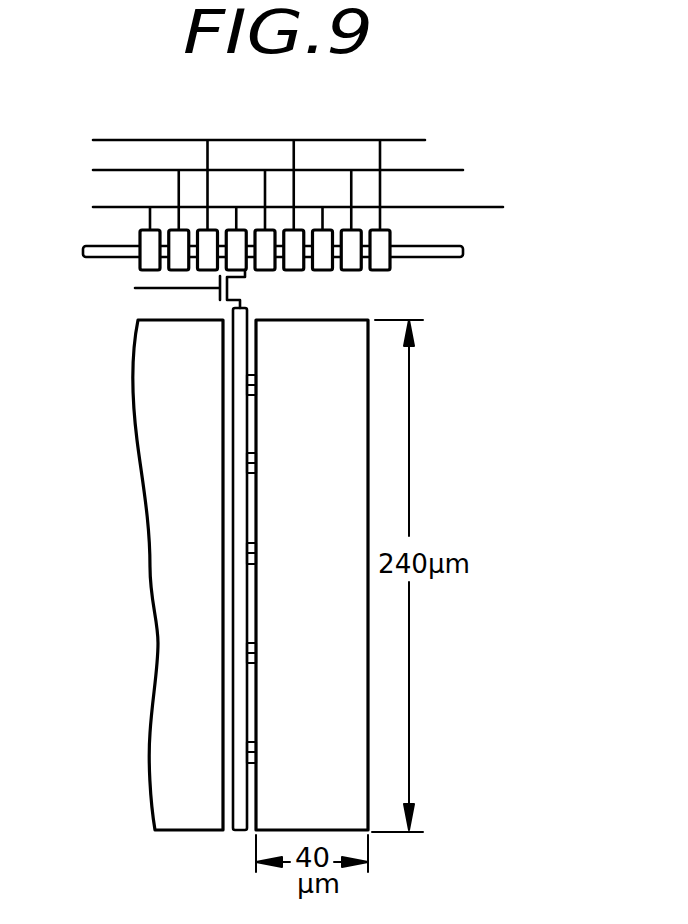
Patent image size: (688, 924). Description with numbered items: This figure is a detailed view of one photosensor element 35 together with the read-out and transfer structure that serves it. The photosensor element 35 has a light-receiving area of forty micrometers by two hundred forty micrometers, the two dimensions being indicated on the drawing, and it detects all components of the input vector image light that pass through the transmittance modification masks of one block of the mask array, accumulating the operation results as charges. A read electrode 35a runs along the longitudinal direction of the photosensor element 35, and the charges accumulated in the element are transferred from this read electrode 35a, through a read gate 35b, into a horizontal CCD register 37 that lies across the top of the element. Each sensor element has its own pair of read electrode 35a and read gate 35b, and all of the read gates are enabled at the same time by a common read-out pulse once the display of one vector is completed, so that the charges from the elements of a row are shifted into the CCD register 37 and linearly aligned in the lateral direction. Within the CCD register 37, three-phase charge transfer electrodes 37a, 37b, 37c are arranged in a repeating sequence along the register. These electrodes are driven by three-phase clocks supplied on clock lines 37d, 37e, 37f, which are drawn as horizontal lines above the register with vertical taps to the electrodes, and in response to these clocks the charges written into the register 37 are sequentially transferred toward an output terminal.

The photosensor element 35 is at (337, 682).
The read electrode 35a is at (237, 677).
The read gate 35b is at (252, 288).
The horizontal CCD register 37 is at (440, 257).
The charge transfer electrode 37a is at (150, 256).
The charge transfer electrode 37b is at (178, 258).
The charge transfer electrode 37c is at (207, 258).
The clock line 37d is at (399, 137).
The clock line 37e is at (310, 170).
The clock line 37f is at (220, 203).